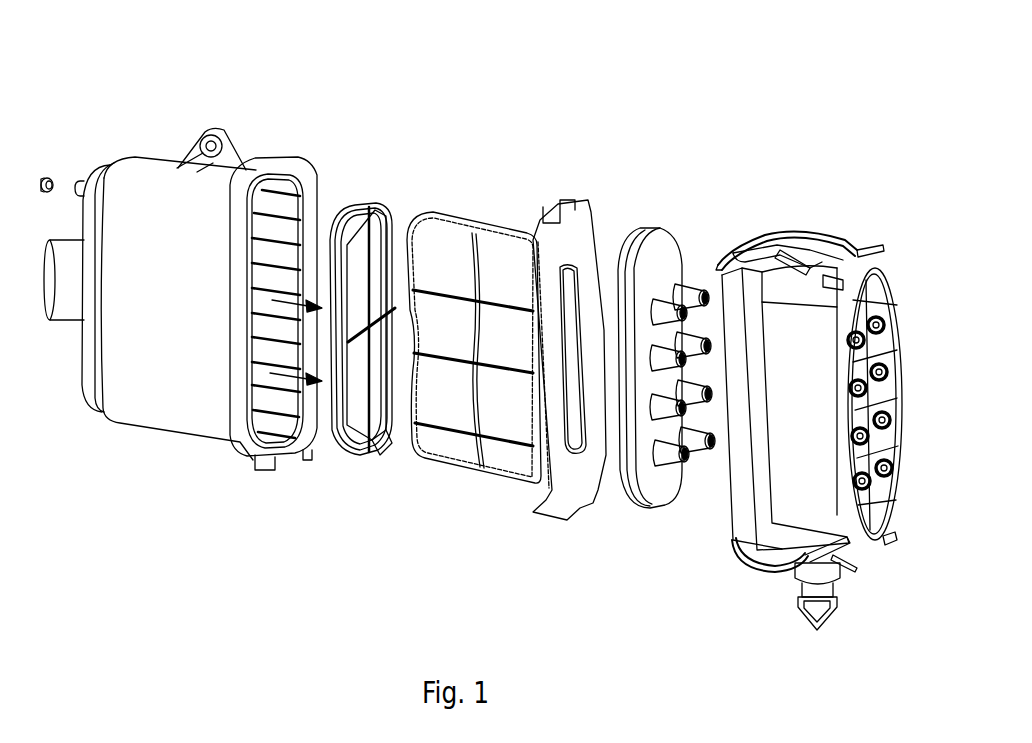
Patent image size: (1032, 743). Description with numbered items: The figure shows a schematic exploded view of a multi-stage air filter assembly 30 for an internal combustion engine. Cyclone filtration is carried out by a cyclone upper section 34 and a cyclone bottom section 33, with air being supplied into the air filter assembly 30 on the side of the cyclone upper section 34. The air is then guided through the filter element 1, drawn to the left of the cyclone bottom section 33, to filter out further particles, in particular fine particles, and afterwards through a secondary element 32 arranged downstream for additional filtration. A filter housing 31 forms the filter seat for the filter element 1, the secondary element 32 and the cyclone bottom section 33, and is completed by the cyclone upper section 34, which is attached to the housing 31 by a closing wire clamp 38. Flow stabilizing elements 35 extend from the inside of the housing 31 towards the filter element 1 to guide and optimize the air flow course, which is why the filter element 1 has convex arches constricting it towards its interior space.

The filter element 1 is at (460, 230).
The air filter assembly 30 is at (645, 166).
The filter housing 31 is at (178, 311).
The secondary element 32 is at (373, 443).
The cyclone bottom section 33 is at (660, 473).
The cyclone upper section 34 is at (808, 413).
The flow stabilizing elements 35 is at (307, 223).
The closing wire clamp 38 is at (810, 233).